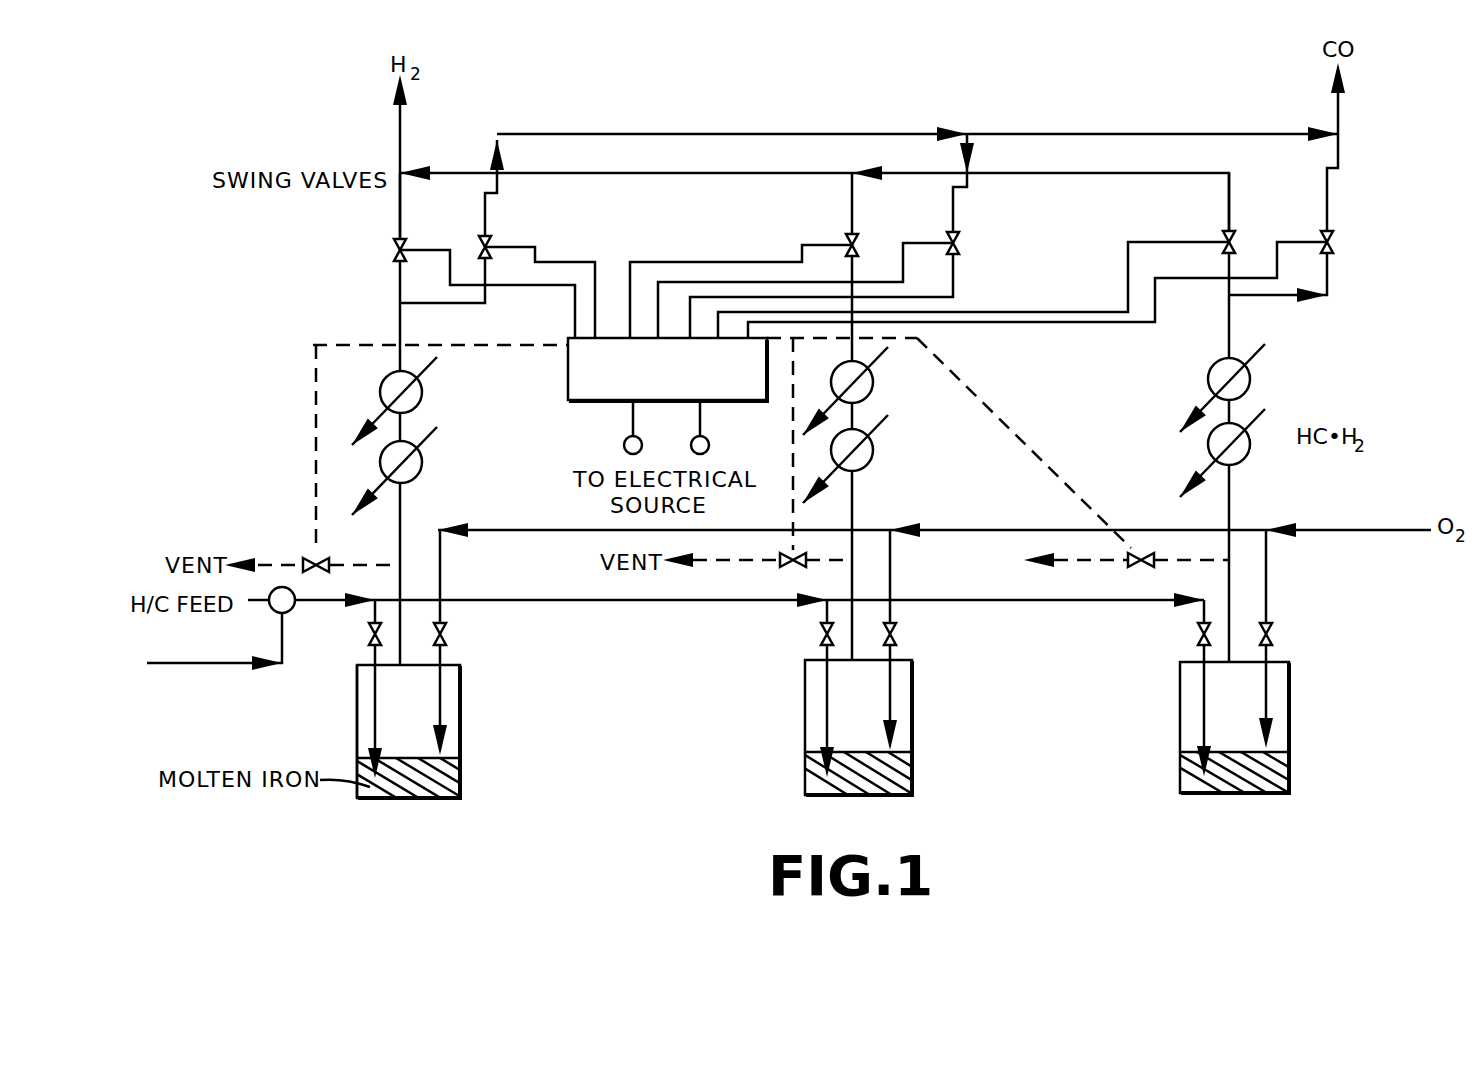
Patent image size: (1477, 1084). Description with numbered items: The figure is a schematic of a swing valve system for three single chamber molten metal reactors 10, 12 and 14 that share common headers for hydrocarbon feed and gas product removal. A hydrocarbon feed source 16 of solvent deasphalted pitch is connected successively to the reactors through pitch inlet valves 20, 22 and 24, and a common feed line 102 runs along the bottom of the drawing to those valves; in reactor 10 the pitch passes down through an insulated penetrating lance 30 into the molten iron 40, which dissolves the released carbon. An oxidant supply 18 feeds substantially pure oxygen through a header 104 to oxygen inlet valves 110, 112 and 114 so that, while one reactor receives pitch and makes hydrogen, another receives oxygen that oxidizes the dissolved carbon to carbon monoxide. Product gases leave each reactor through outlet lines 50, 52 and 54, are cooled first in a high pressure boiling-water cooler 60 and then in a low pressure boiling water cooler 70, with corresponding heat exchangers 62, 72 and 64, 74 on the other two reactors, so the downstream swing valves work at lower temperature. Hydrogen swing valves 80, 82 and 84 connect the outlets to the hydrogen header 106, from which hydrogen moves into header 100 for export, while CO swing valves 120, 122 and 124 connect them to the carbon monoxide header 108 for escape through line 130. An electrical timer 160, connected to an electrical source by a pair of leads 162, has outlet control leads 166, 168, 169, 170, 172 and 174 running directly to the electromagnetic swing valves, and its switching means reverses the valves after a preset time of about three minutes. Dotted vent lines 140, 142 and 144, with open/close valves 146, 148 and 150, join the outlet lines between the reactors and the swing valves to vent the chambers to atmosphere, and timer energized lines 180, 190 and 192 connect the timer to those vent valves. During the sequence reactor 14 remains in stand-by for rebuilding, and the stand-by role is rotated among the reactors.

The molten metal reactor 10 is at (410, 722).
The molten metal reactor 12 is at (868, 720).
The molten metal reactor 14 is at (1243, 719).
The hydrocarbon feed source 16 is at (214, 641).
The oxidant supply 18 is at (1348, 513).
The inlet valve 20 is at (357, 637).
The pitch inlet valve 22 is at (811, 634).
The pitch inlet valve 24 is at (1186, 632).
The penetrating lance 30 is at (328, 731).
The molten iron 40 is at (445, 778).
The outlet line 50 is at (405, 507).
The outlet line 52 is at (857, 492).
The gas product outlet 54 is at (1232, 504).
The high pressure boiling-water cooler 60 is at (392, 473).
The heat exchanger 62 is at (855, 461).
The heat exchanger 64 is at (1232, 455).
The low pressure boiling water cooler 70 is at (392, 403).
The heat exchanger 72 is at (854, 393).
The heat exchanger 74 is at (1232, 390).
The swing valve 80 is at (384, 252).
The hydrogen valve 82 is at (831, 233).
The swing valve 84 is at (1245, 244).
The hydrogen header 100 is at (400, 135).
The hydrocarbon feed header 102 is at (1017, 600).
The oxygen feed header 104 is at (867, 567).
The hydrogen header 106 is at (814, 188).
The carbon monoxide header 108 is at (911, 173).
The oxygen inlet valve 110 is at (466, 637).
The oxygen inlet valve 112 is at (914, 634).
The oxygen inlet valve 114 is at (1290, 632).
The swing valve 120 is at (487, 236).
The CO valve 122 is at (978, 245).
The swing valve 124 is at (1351, 244).
The CO header 130 is at (1340, 110).
The vent line 140 is at (312, 552).
The vent line 142 is at (757, 551).
The vent line 144 is at (1126, 550).
The open/close valve 146 is at (319, 558).
The open/close valve 148 is at (790, 566).
The open/close valve 150 is at (1144, 552).
The electrical timer 160 is at (568, 376).
The leads 162 is at (624, 440).
The outlet control lead 166 is at (504, 285).
The outlet control lead 168 is at (799, 285).
The control line 169 is at (497, 292).
The outlet control lead 170 is at (741, 291).
The outlet control lead 172 is at (805, 290).
The outlet control lead 174 is at (1022, 290).
The timer energized line 180 is at (440, 432).
The timer energized line 190 is at (773, 363).
The timer energized line 192 is at (1026, 442).